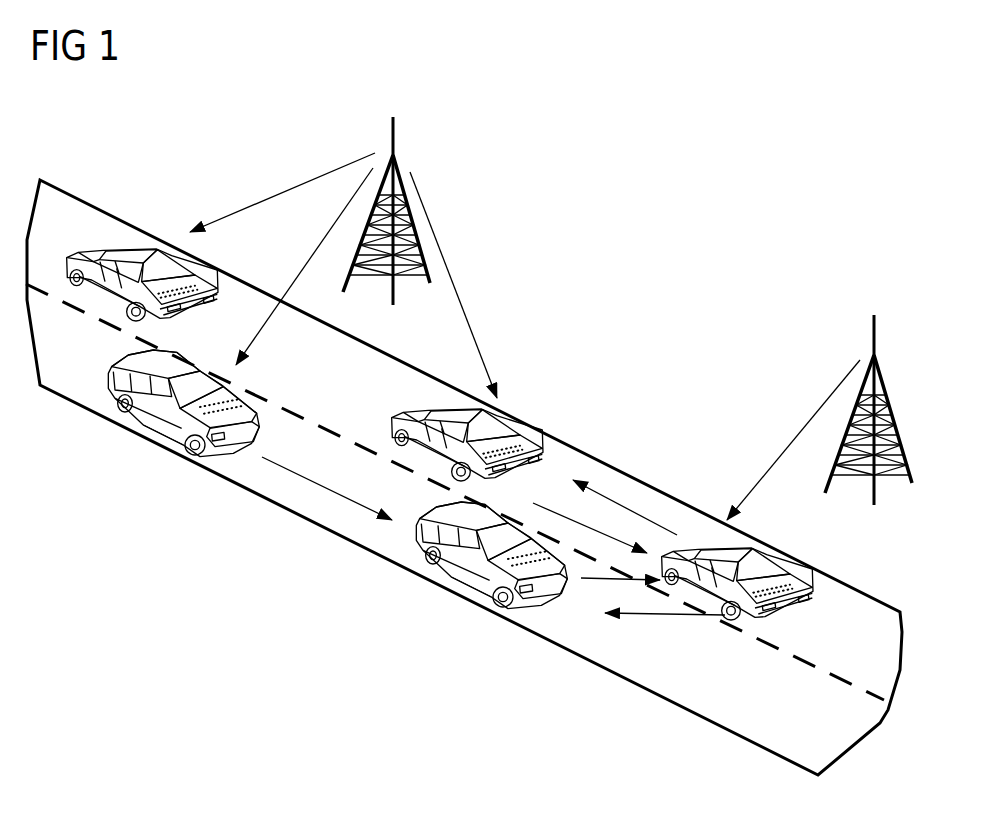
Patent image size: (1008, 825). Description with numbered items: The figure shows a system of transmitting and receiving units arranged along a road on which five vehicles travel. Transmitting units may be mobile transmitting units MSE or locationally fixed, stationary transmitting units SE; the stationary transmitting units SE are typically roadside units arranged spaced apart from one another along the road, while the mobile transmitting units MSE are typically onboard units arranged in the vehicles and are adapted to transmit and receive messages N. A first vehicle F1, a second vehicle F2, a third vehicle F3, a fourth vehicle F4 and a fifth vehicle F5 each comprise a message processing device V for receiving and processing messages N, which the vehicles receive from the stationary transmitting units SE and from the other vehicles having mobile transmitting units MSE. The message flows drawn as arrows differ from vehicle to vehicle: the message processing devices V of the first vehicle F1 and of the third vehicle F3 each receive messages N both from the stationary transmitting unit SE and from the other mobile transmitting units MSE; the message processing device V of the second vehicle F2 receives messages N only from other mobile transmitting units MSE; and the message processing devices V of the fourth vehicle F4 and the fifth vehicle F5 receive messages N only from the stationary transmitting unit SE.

The first vehicle F1 is at (805, 615).
The second vehicle F2 is at (568, 607).
The third vehicle F3 is at (432, 404).
The fourth vehicle F4 is at (238, 458).
The fifth vehicle F5 is at (90, 238).
The mobile transmitting unit MSE is at (172, 287).
The message processing device V is at (193, 282).
The message N is at (288, 192).
The stationary transmitting unit SE is at (397, 123).